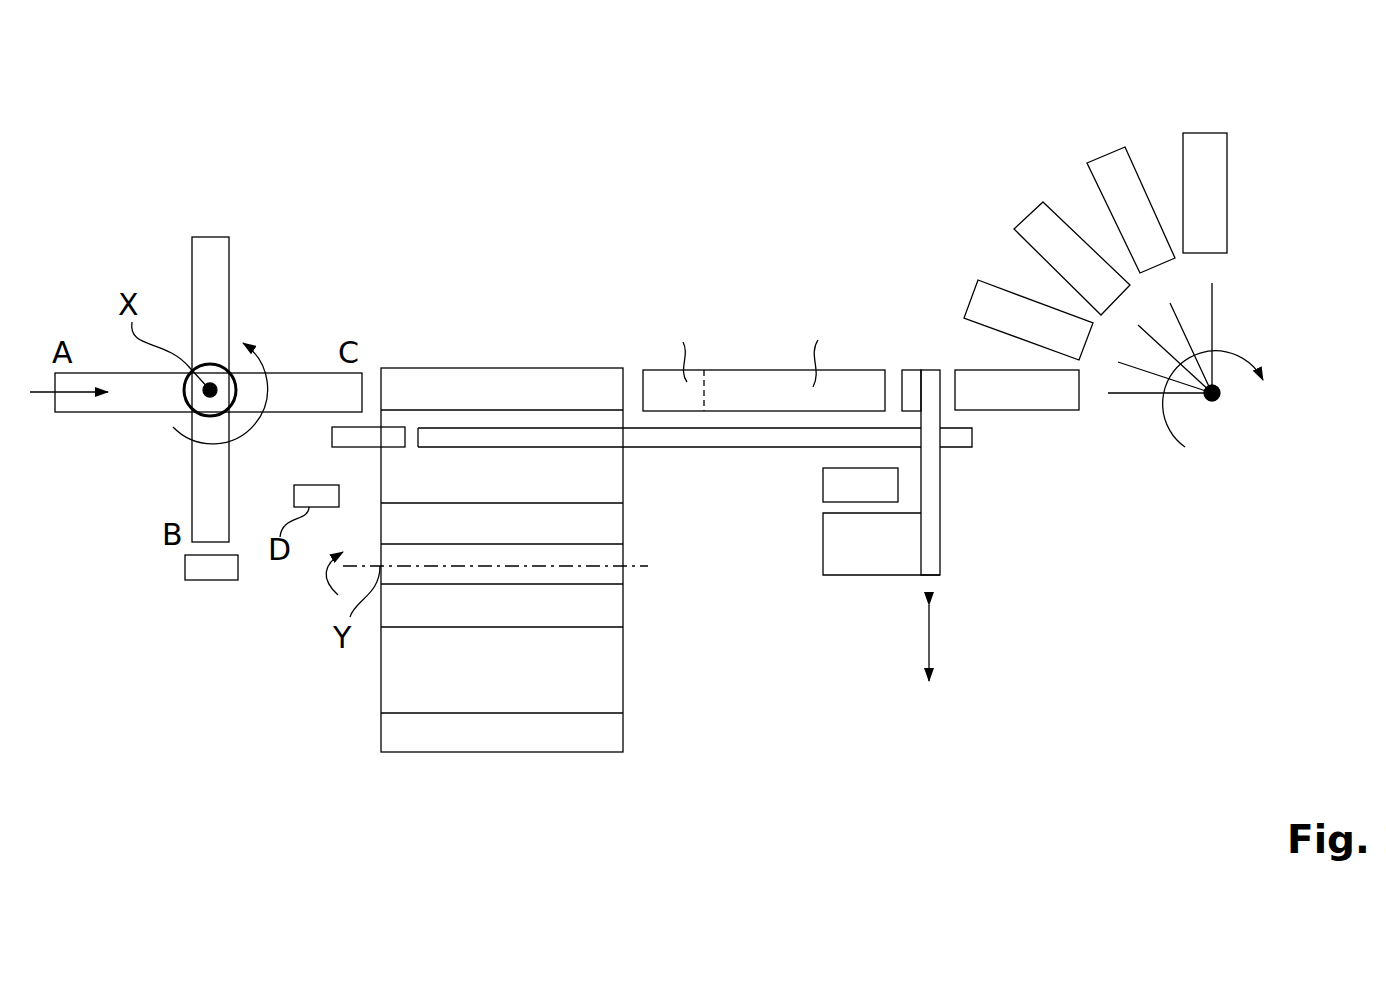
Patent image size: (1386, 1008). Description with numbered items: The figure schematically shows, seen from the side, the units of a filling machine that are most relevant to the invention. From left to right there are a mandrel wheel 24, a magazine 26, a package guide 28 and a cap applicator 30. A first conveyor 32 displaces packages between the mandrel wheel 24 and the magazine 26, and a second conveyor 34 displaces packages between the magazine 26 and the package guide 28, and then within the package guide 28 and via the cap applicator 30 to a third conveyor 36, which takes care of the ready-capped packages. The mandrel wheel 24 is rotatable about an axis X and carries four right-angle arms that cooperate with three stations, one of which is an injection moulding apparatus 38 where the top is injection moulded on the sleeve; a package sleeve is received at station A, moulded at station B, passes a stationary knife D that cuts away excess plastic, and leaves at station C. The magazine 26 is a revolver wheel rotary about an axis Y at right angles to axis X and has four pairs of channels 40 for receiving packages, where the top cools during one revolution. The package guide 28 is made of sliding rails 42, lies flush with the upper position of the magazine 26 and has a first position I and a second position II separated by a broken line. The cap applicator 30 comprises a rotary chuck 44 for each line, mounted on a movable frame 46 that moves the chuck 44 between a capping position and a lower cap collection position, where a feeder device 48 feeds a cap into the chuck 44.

The mandrel wheel 24 is at (188, 253).
The magazine 26 is at (453, 366).
The package guide 28 is at (728, 368).
The cap applicator 30 is at (930, 368).
The first conveyor 32 is at (343, 422).
The second conveyor 34 is at (686, 452).
The third conveyor 36 is at (1090, 152).
The injection moulding apparatus 38 is at (212, 580).
The channels 40 is at (550, 380).
The sliding rails 42 is at (751, 343).
The rotary chuck 44 is at (898, 360).
The movable frame 46 is at (942, 525).
The feeder device 48 is at (823, 488).